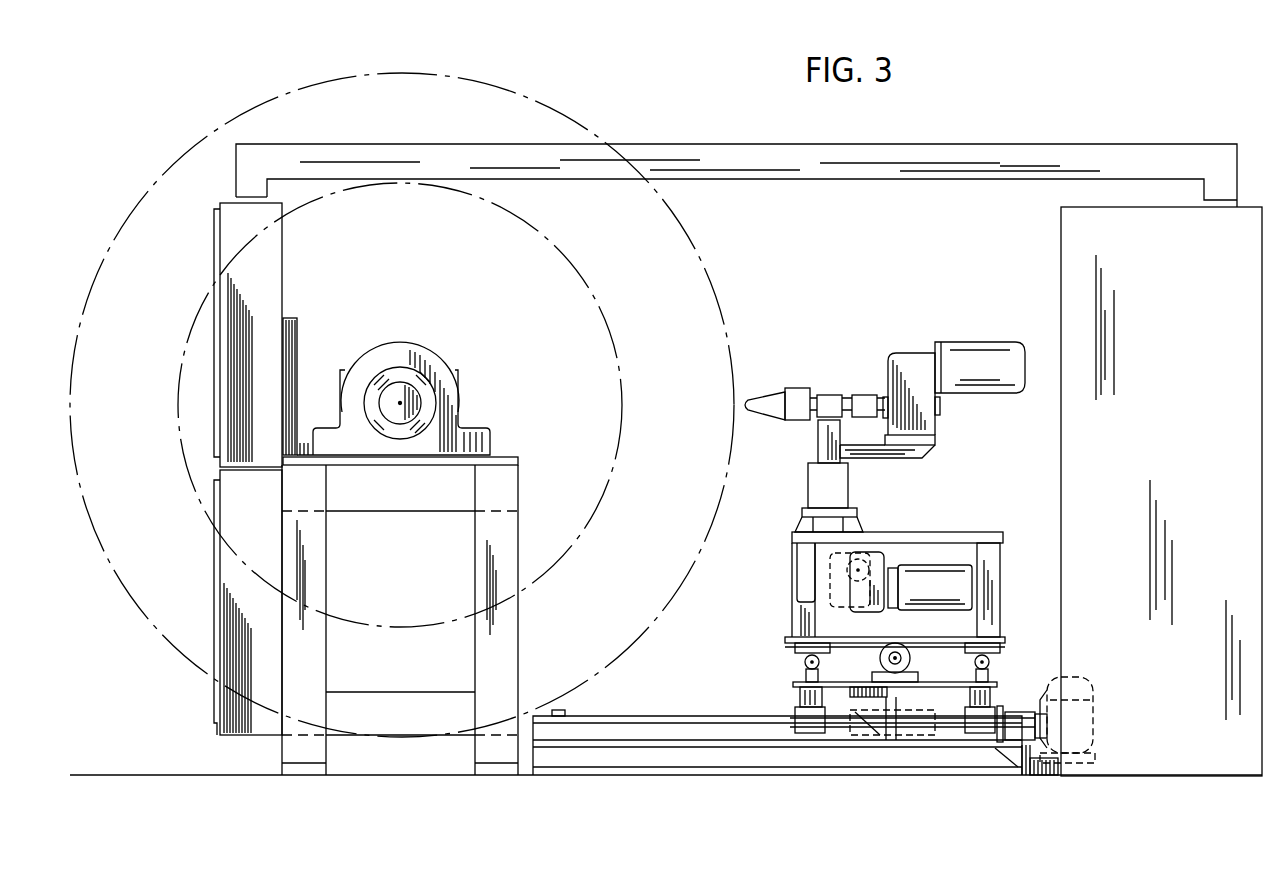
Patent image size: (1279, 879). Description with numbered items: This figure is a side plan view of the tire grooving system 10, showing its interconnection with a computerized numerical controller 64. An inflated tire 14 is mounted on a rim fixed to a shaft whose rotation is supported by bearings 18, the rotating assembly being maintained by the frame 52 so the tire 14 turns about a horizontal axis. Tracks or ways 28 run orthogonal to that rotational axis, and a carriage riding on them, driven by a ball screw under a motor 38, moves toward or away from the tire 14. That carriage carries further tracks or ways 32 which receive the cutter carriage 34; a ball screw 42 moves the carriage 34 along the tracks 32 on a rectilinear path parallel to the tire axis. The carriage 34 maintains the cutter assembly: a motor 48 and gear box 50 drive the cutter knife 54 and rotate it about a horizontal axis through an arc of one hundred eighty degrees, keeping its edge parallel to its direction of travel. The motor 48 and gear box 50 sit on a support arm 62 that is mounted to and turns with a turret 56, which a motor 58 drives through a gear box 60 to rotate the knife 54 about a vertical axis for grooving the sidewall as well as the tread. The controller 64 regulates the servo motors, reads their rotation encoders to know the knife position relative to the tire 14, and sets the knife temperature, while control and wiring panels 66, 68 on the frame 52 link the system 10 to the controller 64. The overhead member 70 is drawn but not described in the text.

The tire grooving system 10 is at (638, 97).
The inflated tire 14 is at (700, 260).
The bearings 18 is at (426, 350).
The tracks or ways 28 is at (597, 716).
The tracks or ways 32 is at (800, 668).
The carriage 34 is at (998, 540).
The motor 38 is at (1047, 703).
The ball screw 42 is at (910, 672).
The motor 48 is at (970, 342).
The gear box 50 is at (892, 358).
The frame 52 is at (323, 546).
The cutter knife 54 is at (752, 394).
The turret 56 is at (848, 506).
The motor 58 is at (915, 572).
The gear box 60 is at (848, 612).
The support arm 62 is at (905, 460).
The computerized numerical controller 64 is at (1172, 762).
The control and wiring panel 66 is at (223, 262).
The control and wiring panel 68 is at (222, 540).
The overhead frame beam 70 is at (735, 146).